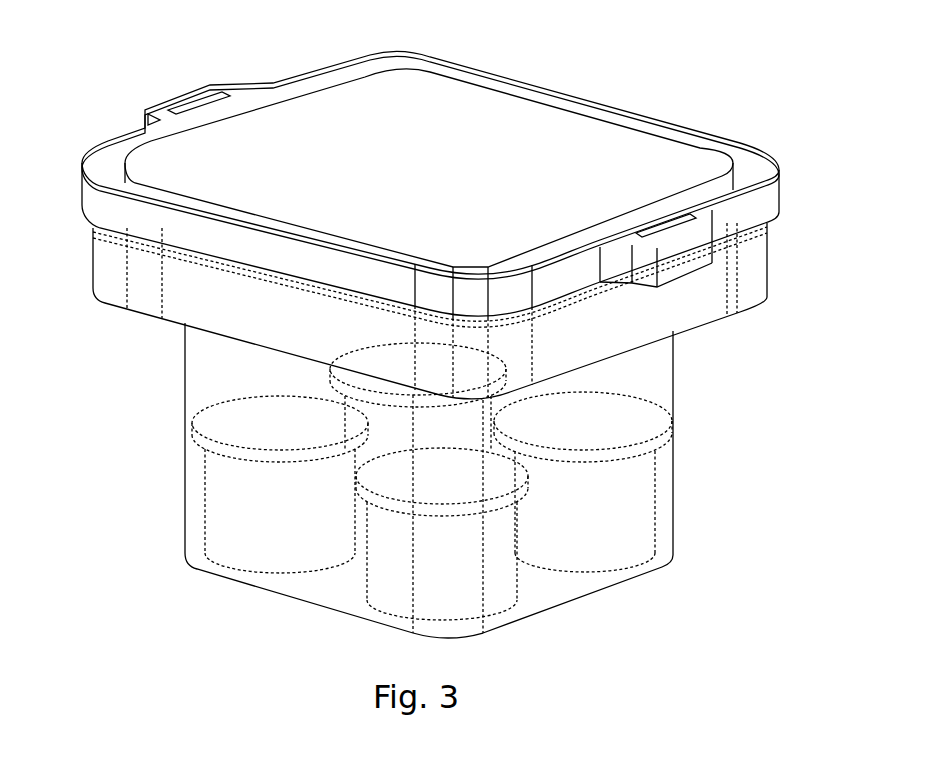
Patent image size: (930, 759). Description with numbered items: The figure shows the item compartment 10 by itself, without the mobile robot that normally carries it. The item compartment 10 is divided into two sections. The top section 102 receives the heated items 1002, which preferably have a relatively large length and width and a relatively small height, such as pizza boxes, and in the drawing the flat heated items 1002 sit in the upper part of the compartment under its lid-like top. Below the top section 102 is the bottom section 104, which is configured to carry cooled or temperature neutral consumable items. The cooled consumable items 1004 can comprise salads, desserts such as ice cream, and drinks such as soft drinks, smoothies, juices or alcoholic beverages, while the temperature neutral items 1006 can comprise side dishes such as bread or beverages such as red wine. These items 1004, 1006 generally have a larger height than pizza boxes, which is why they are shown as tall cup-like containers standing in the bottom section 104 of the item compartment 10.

The item compartment 10 is at (136, 61).
The heated items 1002 is at (650, 139).
The top section 102 is at (92, 323).
The bottom section 104 is at (164, 434).
The cooled consumable items 1004 is at (682, 430).
The temperature neutral items 1006 is at (520, 481).